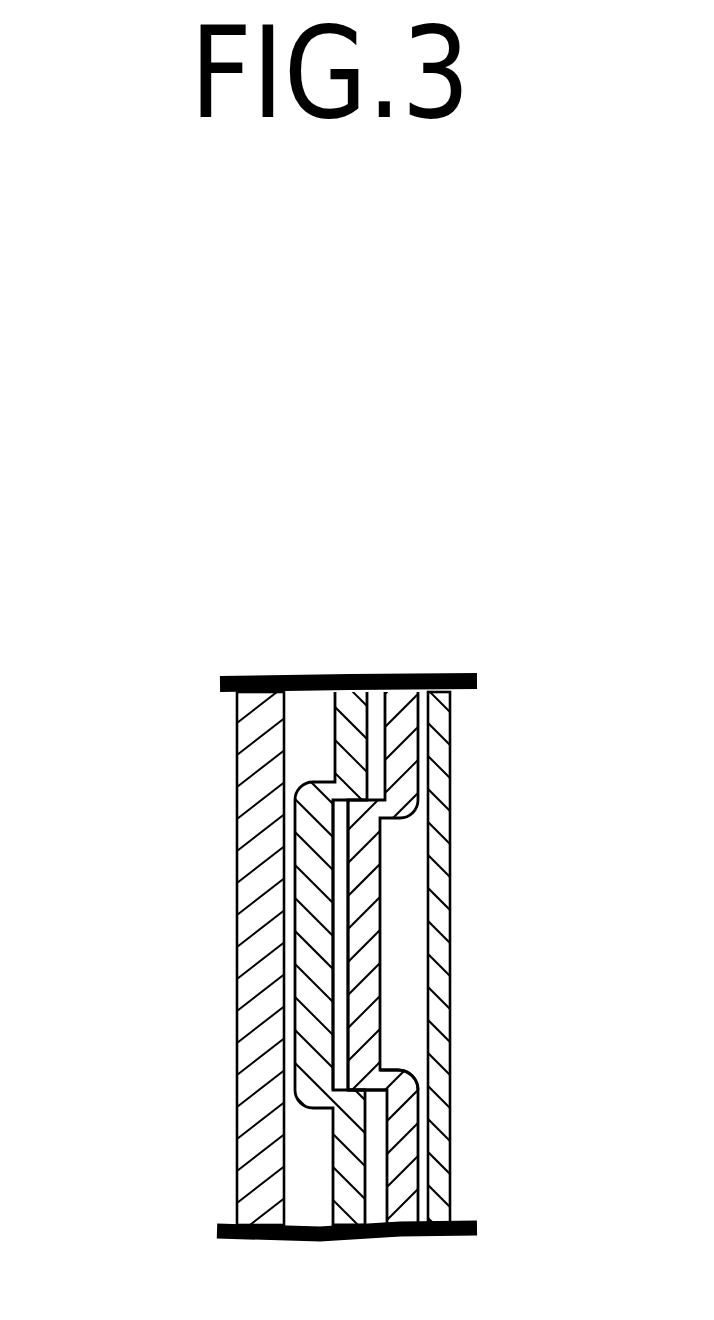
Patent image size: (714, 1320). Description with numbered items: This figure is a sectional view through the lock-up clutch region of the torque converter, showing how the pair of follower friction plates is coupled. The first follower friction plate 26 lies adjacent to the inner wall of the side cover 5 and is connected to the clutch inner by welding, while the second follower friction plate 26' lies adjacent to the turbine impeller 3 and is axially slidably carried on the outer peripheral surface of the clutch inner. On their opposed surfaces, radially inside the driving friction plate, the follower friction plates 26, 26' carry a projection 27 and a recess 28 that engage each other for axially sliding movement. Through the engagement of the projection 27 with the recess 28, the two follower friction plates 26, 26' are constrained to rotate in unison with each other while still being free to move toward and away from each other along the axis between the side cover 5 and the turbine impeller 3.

The turbine impeller 3 is at (440, 948).
The side cover 5 is at (253, 858).
The first follower friction plate 26 is at (298, 885).
The second follower friction plate 26' is at (431, 918).
The projection 27 is at (359, 1088).
The recess 28 is at (360, 947).